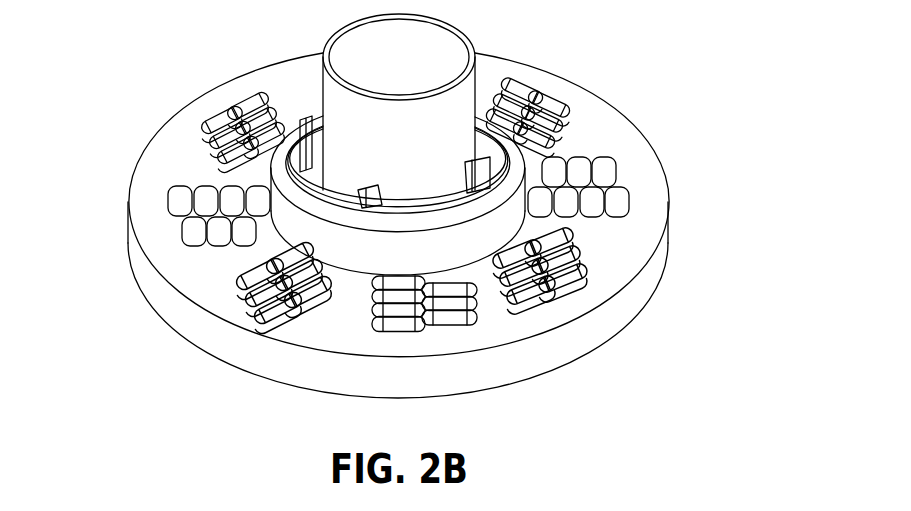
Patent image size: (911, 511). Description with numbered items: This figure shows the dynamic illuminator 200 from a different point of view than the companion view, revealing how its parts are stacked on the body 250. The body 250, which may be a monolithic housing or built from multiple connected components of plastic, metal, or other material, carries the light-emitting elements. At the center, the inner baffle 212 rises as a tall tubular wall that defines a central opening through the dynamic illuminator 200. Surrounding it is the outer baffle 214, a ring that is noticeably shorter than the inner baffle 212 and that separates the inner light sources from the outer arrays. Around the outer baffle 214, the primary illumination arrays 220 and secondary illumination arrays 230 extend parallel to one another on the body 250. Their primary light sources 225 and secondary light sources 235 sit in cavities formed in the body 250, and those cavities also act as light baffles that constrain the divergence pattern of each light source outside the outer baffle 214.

The dynamic illuminator 200 is at (154, 30).
The inner baffle 212 is at (476, 54).
The outer baffle 214 is at (328, 238).
The primary illumination arrays 220 is at (164, 198).
The primary light sources 225 is at (180, 182).
The secondary illumination arrays 230 is at (176, 225).
The secondary light sources 235 is at (188, 257).
The body 250 is at (630, 148).